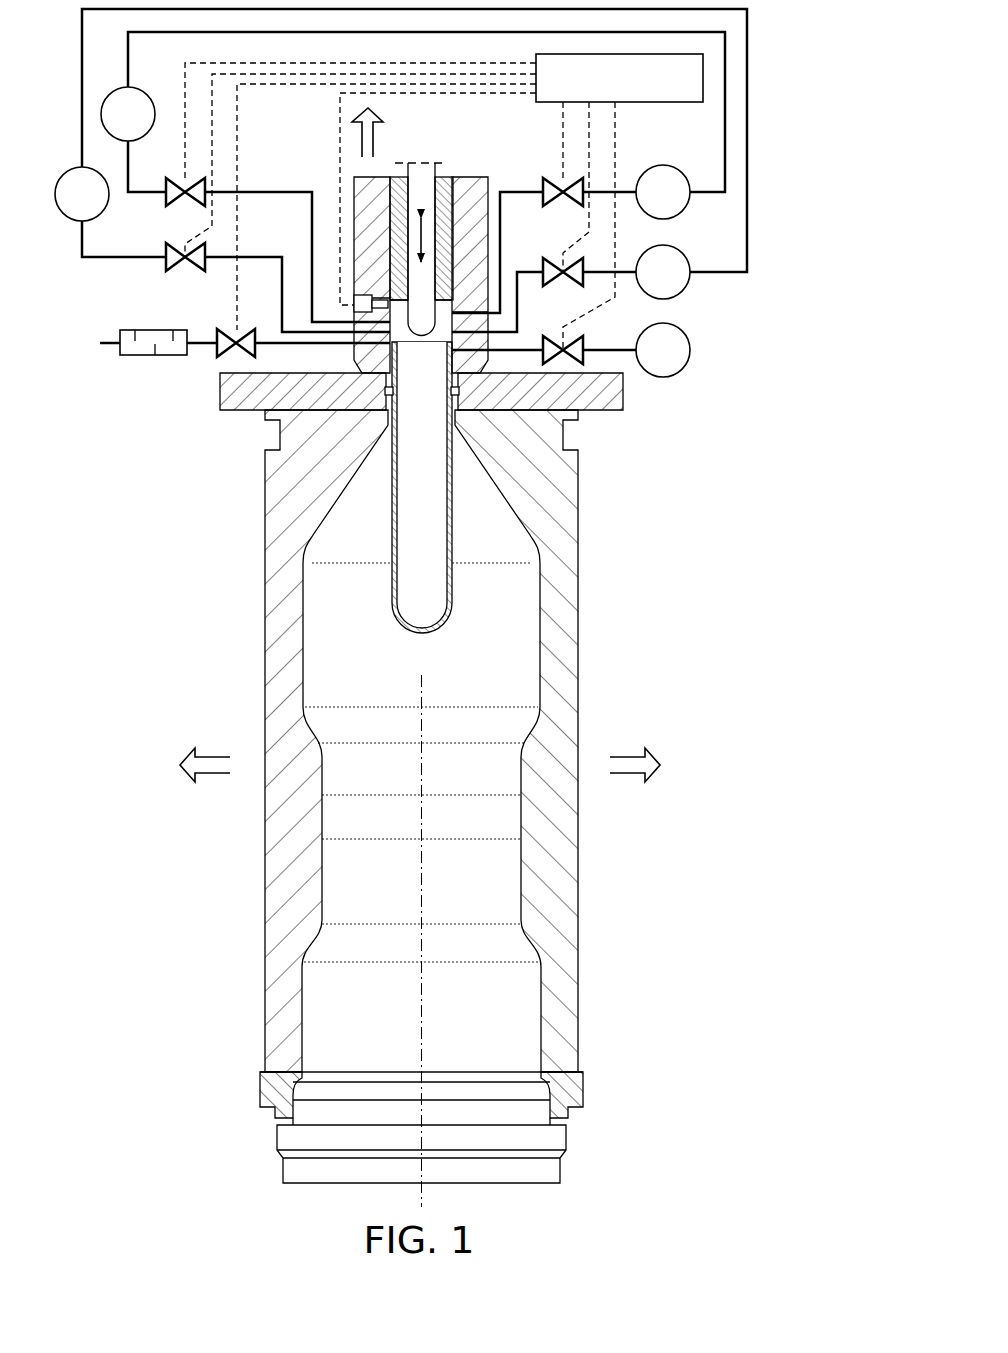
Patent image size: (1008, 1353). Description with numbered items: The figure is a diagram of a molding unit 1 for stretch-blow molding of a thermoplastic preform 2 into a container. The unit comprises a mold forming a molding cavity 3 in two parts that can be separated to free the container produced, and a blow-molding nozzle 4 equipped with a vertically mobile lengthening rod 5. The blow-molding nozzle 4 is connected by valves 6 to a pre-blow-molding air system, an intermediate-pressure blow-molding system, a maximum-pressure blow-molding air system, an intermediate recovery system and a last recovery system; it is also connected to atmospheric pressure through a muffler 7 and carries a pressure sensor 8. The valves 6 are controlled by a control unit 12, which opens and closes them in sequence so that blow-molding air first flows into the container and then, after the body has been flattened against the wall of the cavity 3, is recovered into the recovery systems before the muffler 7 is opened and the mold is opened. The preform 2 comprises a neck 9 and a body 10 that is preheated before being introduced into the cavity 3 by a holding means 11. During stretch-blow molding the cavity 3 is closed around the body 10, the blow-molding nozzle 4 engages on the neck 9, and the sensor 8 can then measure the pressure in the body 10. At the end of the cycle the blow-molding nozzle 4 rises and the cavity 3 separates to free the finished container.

The molding unit 1 is at (190, 518).
The thermoplastic preform 2 is at (460, 571).
The molding cavity 3 is at (352, 1034).
The blow-molding nozzle 4 is at (476, 184).
The lengthening rod 5 is at (425, 176).
The valves 6 is at (585, 357).
The muffler 7 is at (122, 330).
The pressure sensor 8 is at (360, 296).
The neck 9 is at (400, 375).
The body 10 is at (392, 515).
The holding means 11 is at (237, 412).
The control unit 12 is at (606, 89).